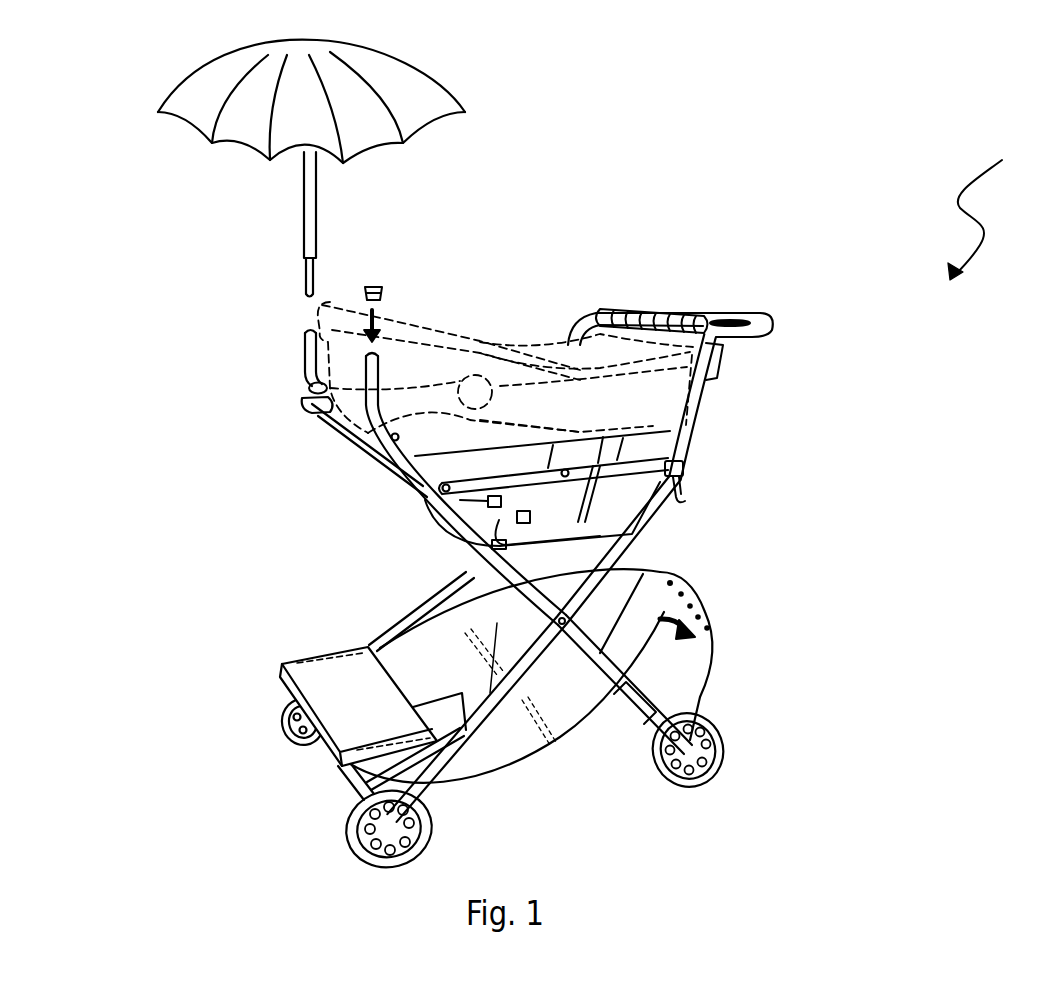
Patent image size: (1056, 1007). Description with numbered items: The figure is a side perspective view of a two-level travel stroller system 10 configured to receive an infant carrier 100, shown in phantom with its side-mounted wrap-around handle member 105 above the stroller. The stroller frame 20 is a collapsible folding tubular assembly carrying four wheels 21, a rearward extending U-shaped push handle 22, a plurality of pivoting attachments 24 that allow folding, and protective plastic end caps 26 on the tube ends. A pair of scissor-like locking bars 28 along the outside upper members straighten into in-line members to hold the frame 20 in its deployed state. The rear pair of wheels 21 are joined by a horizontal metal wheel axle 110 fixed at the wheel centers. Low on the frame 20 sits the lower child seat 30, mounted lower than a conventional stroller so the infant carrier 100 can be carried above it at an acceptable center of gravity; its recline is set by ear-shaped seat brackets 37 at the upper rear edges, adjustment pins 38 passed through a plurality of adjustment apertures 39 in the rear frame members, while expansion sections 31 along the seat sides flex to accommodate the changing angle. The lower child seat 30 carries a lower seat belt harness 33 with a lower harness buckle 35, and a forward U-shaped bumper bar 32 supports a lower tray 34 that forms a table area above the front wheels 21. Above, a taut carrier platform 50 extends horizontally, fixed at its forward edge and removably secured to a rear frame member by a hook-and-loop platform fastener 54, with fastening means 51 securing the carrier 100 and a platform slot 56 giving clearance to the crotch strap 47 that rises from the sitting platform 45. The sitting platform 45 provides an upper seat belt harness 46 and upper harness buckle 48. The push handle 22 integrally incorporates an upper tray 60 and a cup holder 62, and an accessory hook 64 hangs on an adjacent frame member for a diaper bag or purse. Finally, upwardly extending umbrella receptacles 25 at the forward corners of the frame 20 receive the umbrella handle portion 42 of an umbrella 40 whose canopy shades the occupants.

The two-level travel stroller system 10 is at (990, 210).
The stroller frame 20 is at (405, 622).
The wheels 21 is at (345, 830).
The push handle 22 is at (583, 330).
The pivoting attachments 24 is at (563, 626).
The umbrella receptacles 25 is at (300, 335).
The protective plastic end caps 26 is at (377, 286).
The locking bars 28 is at (507, 480).
The lower child seat 30 is at (473, 690).
The expansion sections 31 is at (507, 628).
The bumper bar 32 is at (282, 680).
The lower seat belt harness 33 is at (555, 592).
The lower tray 34 is at (337, 692).
The lower harness buckle 35 is at (508, 620).
The seat brackets 37 is at (668, 576).
The adjustment pins 38 is at (673, 583).
The adjustment apertures 39 is at (683, 594).
The umbrella 40 is at (397, 96).
The umbrella handle portion 42 is at (310, 276).
The sitting platform 45 is at (595, 520).
The upper seat belt harness 46 is at (506, 547).
The crotch strap 47 is at (596, 490).
The upper harness buckle 48 is at (501, 501).
The carrier platform 50 is at (685, 467).
The fastening means 51 is at (312, 385).
The platform fastener 54 is at (595, 430).
The platform slot 56 is at (728, 383).
The upper tray 60 is at (640, 310).
The cup holder 62 is at (722, 321).
The accessory hook 64 is at (688, 475).
The infant carrier 100 is at (339, 306).
The wrap-around handle member 105 is at (300, 404).
The wheel axle 110 is at (613, 692).